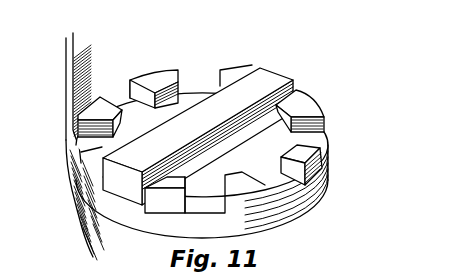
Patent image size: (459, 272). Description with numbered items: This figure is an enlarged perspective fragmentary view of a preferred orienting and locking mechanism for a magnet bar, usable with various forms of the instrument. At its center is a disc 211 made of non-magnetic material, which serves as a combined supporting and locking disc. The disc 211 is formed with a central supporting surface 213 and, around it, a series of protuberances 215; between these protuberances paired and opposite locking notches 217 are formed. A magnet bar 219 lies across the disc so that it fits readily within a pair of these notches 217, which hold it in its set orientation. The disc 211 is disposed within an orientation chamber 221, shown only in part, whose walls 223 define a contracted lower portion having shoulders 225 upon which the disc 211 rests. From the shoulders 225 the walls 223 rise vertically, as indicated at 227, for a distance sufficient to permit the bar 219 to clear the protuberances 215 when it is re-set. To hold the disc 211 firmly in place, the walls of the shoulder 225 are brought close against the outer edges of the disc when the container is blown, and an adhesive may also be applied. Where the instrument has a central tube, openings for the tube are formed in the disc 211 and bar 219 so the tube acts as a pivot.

The disc 211 is at (310, 208).
The central supporting surface 213 is at (282, 137).
The protuberances 215 is at (306, 162).
The locking notches 217 is at (188, 210).
The magnet bar 219 is at (287, 77).
The orientation chamber 221 is at (63, 61).
The walls 223 is at (68, 110).
The shoulders 225 is at (85, 235).
The vertical wall portion 227 is at (68, 82).